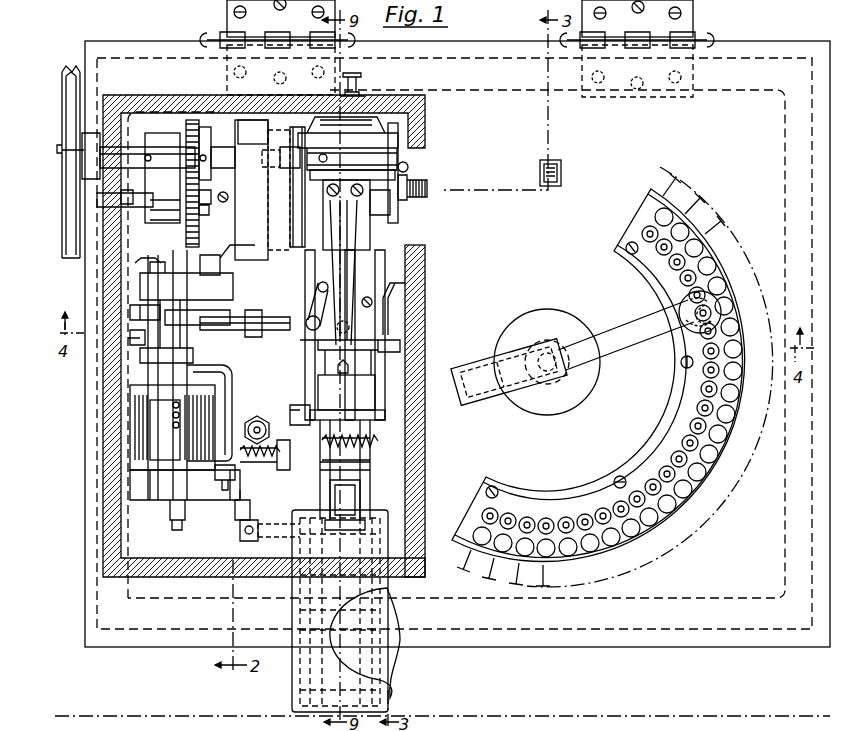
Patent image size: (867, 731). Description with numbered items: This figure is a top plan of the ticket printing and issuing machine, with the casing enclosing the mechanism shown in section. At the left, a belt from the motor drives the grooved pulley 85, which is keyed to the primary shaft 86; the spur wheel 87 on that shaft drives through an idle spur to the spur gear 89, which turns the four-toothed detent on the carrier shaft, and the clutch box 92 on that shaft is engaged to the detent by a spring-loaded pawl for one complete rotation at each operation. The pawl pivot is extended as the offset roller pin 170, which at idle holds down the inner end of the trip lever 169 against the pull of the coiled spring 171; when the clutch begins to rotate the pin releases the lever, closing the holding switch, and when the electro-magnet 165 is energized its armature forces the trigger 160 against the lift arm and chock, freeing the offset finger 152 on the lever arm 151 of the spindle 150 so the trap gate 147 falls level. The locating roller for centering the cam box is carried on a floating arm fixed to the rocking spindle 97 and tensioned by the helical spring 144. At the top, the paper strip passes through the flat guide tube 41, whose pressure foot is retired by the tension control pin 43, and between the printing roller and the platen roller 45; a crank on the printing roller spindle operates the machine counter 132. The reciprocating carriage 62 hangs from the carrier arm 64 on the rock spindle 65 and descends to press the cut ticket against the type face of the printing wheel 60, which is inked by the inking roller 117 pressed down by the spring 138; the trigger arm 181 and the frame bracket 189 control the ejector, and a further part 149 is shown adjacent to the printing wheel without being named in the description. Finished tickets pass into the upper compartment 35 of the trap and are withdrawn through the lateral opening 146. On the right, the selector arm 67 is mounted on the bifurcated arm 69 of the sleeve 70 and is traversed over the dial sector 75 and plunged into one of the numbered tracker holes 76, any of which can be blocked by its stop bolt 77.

The grooved pulley 85 is at (74, 58).
The primary shaft 86 is at (136, 152).
The spur wheel 87 is at (200, 130).
The clutch box 92 is at (267, 190).
The flat guide tube 41 is at (388, 136).
The tension control pin 43 is at (360, 83).
The platen roller 45 is at (365, 178).
The rock spindle 65 is at (398, 210).
The carrier arm 64 is at (354, 262).
The frame bracket 189 is at (370, 292).
The trigger arm 181 is at (392, 302).
The reciprocating carriage 62 is at (386, 337).
The inking roller 117 is at (350, 402).
The trap gate 147 is at (368, 418).
The spring 138 is at (368, 448).
The guide 149 is at (365, 468).
The printing wheel 60 is at (350, 494).
The spur gear 89 is at (192, 232).
The offset roller pin 170 is at (216, 242).
The coiled spring 171 is at (225, 295).
The trip lever 169 is at (215, 325).
The rocking spindle 97 is at (248, 322).
The trigger 160 is at (228, 398).
The helical spring 144 is at (257, 420).
The electro-magnet 165 is at (143, 460).
The offset finger 152 is at (226, 478).
The lever arm 151 is at (236, 508).
The spindle 150 is at (240, 533).
The machine counter 132 is at (561, 172).
The upper compartment 35 is at (365, 662).
The lateral opening 146 is at (378, 615).
The sleeve 70 is at (566, 386).
The bifurcated arm 69 is at (470, 360).
The selector arm 67 is at (630, 336).
The tracker holes 76 is at (680, 286).
The dial sector 75 is at (670, 396).
The stop bolt 77 is at (707, 205).